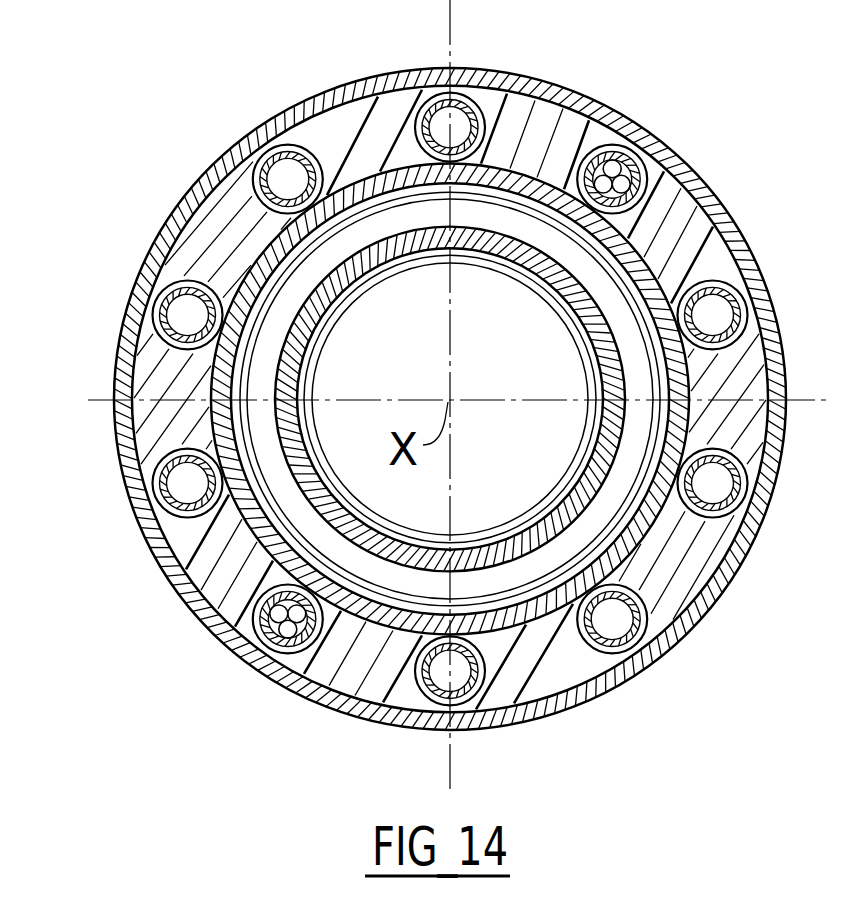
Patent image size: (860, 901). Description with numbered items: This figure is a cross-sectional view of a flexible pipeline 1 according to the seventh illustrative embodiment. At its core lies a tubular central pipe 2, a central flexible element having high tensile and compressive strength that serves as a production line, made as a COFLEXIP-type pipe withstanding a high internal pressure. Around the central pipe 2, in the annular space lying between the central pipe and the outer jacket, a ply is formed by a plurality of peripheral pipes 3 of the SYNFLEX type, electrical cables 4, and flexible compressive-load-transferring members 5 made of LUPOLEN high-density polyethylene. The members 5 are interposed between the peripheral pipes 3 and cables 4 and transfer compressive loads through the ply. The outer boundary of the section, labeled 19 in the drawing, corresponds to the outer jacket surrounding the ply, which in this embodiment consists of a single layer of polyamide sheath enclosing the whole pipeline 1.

The flexible pipeline 1 is at (156, 177).
The tubular central pipe 2 is at (648, 575).
The peripheral pipes 3 is at (444, 121).
The electrical cables 4 is at (622, 168).
The compressive-load-transferring members 5 is at (352, 130).
The outer pipe 19 is at (130, 361).